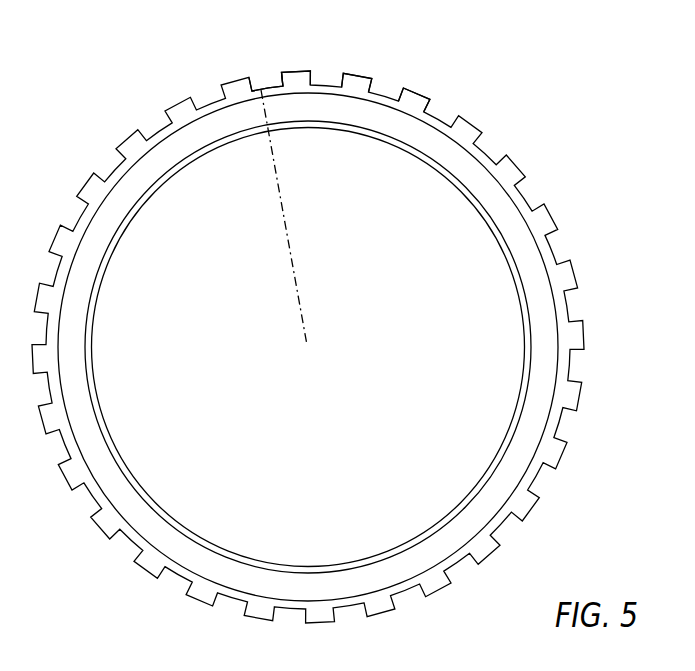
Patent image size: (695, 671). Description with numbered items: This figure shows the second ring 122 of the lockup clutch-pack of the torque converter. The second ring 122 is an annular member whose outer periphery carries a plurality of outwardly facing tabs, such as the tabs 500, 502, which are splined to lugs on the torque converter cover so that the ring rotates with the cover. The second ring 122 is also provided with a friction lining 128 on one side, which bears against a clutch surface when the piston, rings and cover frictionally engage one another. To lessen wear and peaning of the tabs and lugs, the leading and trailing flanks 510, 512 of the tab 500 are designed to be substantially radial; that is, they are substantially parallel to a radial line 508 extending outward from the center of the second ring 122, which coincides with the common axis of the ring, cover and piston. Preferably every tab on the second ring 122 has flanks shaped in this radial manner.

The tab 500 is at (293, 68).
The tab 502 is at (410, 80).
The flank 510 is at (313, 77).
The flank 512 is at (277, 78).
The radial line 508 is at (288, 248).
The second ring 122 is at (494, 230).
The friction lining 128 is at (543, 378).